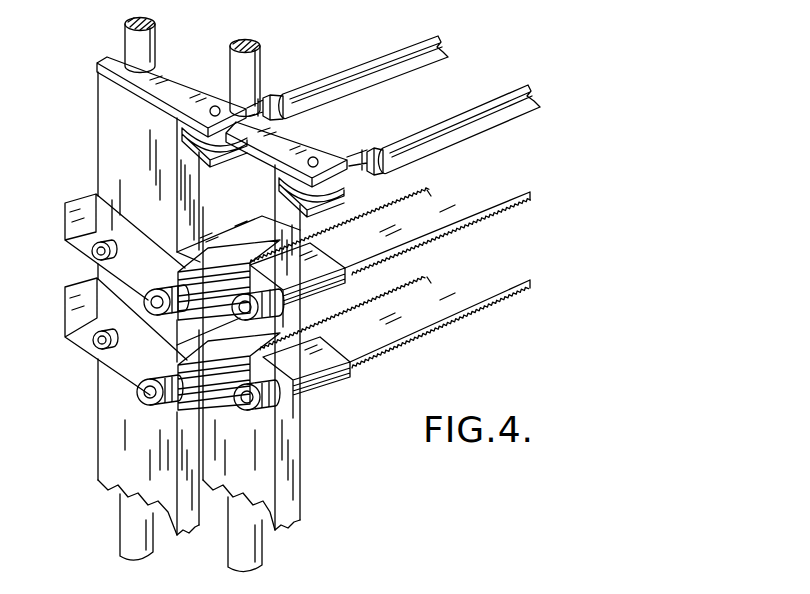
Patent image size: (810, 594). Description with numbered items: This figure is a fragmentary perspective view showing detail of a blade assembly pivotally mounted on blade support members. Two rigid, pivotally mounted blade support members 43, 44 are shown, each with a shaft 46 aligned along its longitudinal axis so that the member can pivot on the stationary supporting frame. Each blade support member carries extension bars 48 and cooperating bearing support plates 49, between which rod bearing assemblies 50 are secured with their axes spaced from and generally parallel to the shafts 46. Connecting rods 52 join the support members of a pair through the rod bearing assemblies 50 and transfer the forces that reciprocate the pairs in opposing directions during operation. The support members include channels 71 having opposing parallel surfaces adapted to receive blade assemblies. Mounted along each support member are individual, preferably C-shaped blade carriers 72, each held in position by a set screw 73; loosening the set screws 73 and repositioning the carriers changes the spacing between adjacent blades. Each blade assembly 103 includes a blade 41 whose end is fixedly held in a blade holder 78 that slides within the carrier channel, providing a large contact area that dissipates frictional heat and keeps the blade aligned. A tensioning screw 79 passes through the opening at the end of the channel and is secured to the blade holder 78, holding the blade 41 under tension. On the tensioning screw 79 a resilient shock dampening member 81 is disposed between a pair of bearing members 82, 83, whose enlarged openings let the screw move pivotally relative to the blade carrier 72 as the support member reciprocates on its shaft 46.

The blade 41 is at (477, 214).
The blade support member 43 is at (268, 472).
The blade support member 44 is at (107, 145).
The shaft member 46 is at (128, 38).
The extension bar 48 is at (168, 92).
The bearing support plate 49 is at (237, 150).
The rod bearing assembly 50 is at (260, 102).
The connecting rod 52 is at (357, 70).
The channel 71 is at (187, 408).
The blade carrier 72 is at (65, 212).
The set screw 73 is at (93, 253).
The blade holder 78 is at (345, 287).
The tensioning screw 79 is at (150, 300).
The shock dampening member 81 is at (168, 280).
The bearing member 82 is at (180, 272).
The outer bearing member 83 is at (157, 400).
The blade assembly 103 is at (136, 402).